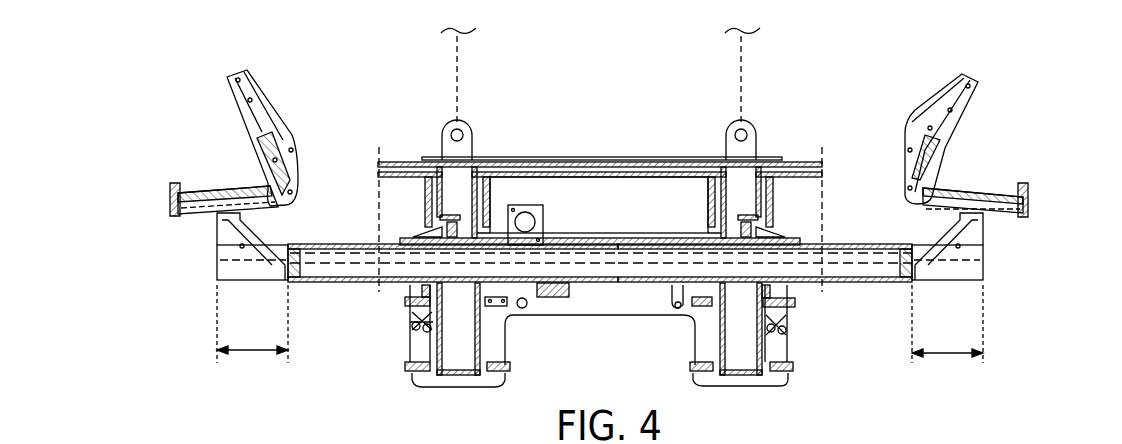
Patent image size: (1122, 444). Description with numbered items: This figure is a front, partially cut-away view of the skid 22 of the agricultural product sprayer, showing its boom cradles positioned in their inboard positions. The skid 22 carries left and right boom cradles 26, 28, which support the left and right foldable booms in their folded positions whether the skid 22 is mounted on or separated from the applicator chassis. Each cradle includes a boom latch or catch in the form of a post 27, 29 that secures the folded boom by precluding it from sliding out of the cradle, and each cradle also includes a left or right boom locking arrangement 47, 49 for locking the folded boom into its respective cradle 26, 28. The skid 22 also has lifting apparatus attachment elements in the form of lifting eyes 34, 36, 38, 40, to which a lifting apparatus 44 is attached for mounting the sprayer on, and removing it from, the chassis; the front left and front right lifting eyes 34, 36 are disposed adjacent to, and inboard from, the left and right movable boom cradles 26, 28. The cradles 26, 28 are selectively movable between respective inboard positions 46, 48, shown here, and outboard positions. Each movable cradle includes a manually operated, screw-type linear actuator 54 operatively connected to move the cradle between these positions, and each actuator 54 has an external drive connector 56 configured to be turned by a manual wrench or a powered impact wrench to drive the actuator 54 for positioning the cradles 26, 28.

The skid 22 is at (847, 72).
The left boom cradle 26 is at (973, 191).
The post 27 is at (1028, 193).
The right boom cradle 28 is at (226, 188).
The post 29 is at (168, 198).
The lifting eye 34 is at (824, 226).
The lifting eye 36 is at (378, 230).
The lifting eye 38 is at (754, 130).
The lifting eye 40 is at (451, 128).
The lifting apparatus 44 is at (460, 92).
The inboard position 46 is at (946, 355).
The left boom locking arrangement 47 is at (940, 143).
The inboard position 48 is at (250, 352).
The right boom locking arrangement 49 is at (257, 146).
The screw-type linear actuator 54 is at (398, 262).
The external drive connector 56 is at (215, 258).